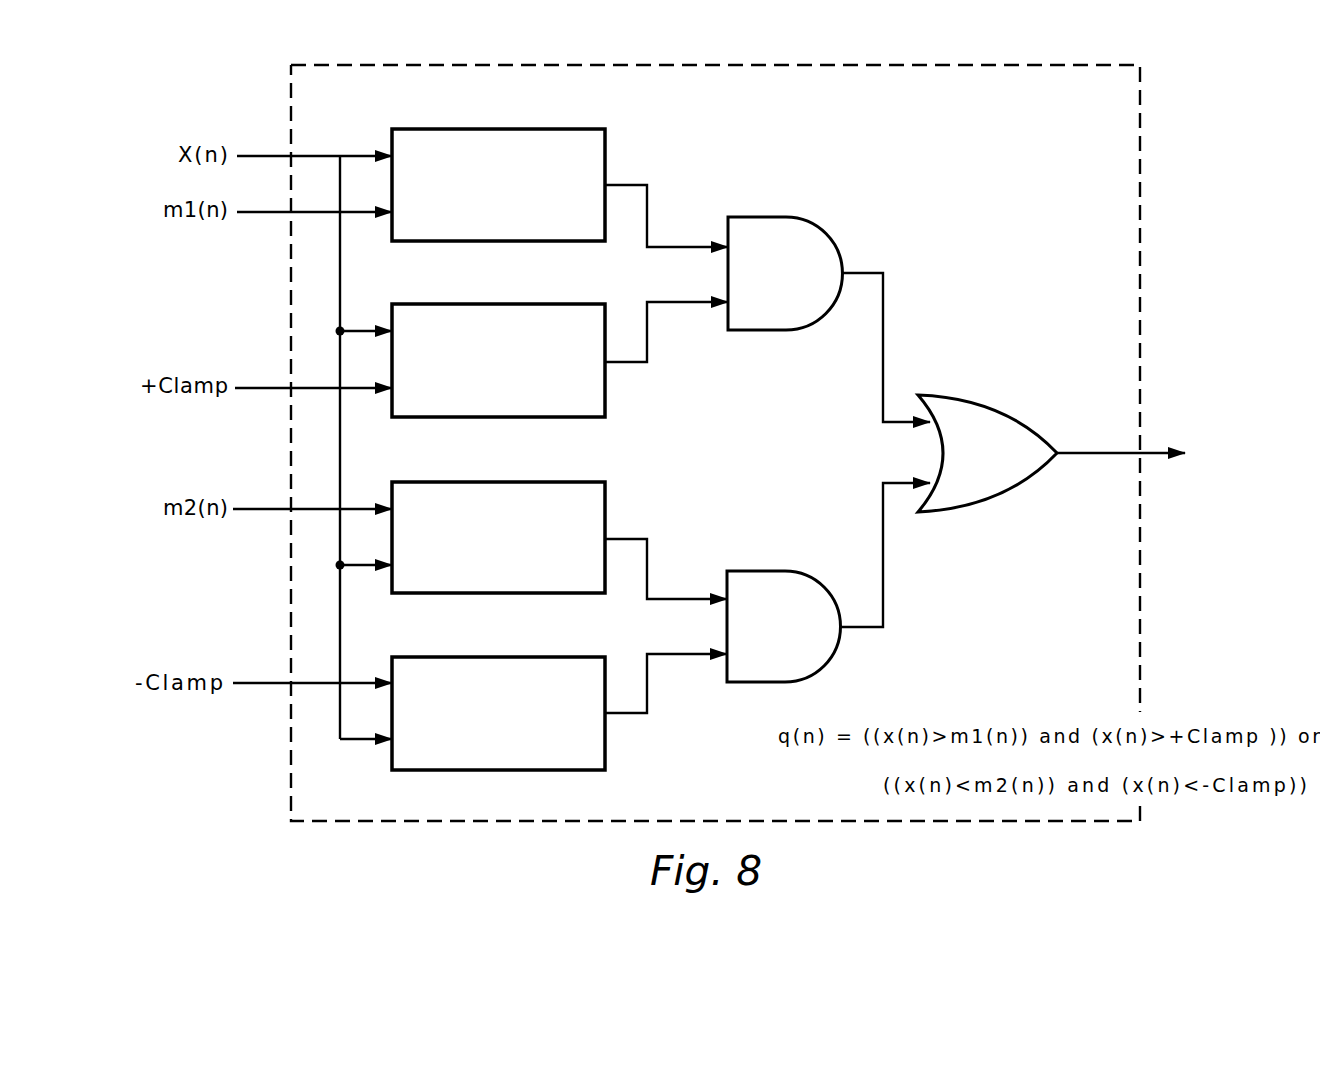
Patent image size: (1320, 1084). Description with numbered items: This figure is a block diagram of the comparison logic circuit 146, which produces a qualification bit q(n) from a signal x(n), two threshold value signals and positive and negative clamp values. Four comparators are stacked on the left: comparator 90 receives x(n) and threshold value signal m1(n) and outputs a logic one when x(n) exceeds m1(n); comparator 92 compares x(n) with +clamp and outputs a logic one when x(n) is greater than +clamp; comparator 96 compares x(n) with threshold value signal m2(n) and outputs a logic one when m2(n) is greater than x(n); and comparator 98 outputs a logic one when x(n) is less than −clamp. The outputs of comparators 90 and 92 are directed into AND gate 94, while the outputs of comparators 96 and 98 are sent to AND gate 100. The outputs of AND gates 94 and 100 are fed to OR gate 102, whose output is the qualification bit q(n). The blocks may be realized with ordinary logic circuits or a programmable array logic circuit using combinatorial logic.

The comparator 90 is at (606, 148).
The comparator 92 is at (606, 395).
The AND gate 94 is at (815, 219).
The comparator 96 is at (606, 508).
The comparator 98 is at (606, 745).
The AND gate 100 is at (810, 678).
The OR gate 102 is at (996, 505).
The comparison logic 146 is at (1141, 204).